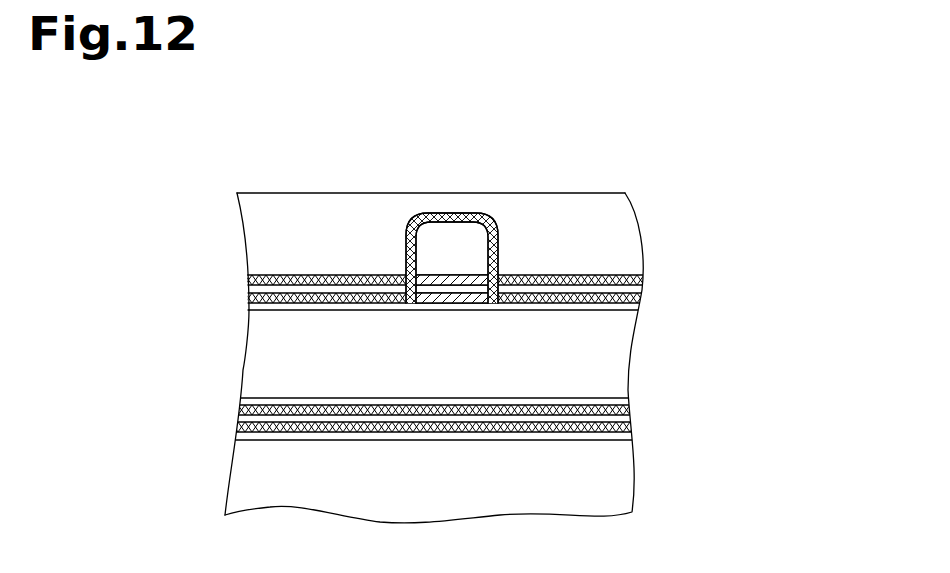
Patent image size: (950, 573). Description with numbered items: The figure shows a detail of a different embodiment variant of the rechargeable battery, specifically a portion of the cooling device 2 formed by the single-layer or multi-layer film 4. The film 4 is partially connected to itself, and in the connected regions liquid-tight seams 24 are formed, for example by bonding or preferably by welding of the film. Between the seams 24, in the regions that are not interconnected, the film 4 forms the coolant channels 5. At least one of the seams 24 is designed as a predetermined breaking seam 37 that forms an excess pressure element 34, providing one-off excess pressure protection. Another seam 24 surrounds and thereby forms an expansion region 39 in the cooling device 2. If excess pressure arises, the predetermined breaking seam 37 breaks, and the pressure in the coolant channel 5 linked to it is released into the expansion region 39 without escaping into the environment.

The cooling device 2 is at (762, 160).
The single-layer or multi-layer film 4 is at (254, 243).
The coolant channel 5 is at (250, 349).
The seam 24 is at (243, 407).
The excess pressure element 34 is at (384, 210).
The predetermined breaking seam 37 is at (449, 268).
The expansion region 39 is at (468, 230).